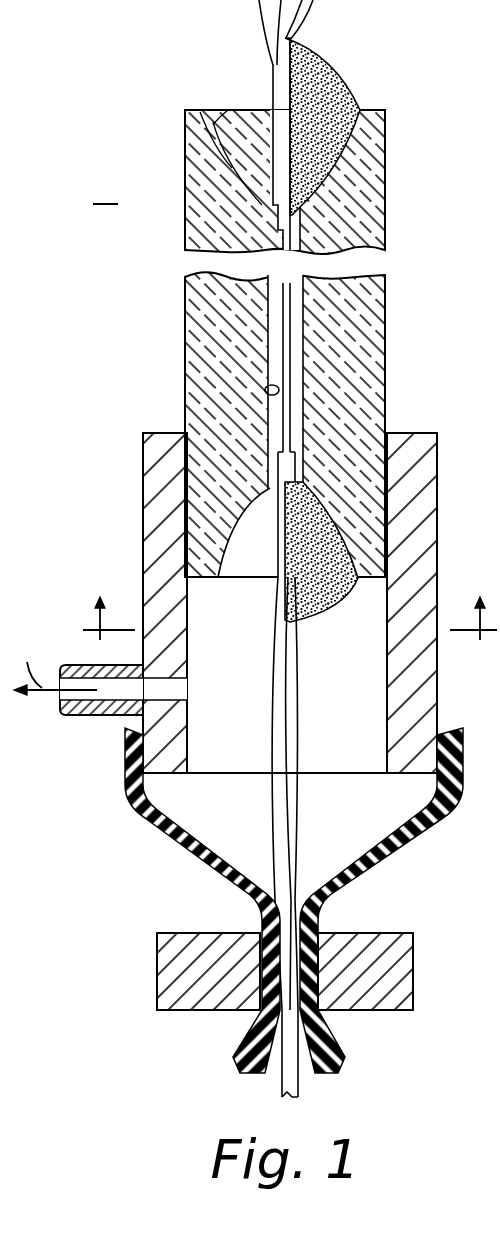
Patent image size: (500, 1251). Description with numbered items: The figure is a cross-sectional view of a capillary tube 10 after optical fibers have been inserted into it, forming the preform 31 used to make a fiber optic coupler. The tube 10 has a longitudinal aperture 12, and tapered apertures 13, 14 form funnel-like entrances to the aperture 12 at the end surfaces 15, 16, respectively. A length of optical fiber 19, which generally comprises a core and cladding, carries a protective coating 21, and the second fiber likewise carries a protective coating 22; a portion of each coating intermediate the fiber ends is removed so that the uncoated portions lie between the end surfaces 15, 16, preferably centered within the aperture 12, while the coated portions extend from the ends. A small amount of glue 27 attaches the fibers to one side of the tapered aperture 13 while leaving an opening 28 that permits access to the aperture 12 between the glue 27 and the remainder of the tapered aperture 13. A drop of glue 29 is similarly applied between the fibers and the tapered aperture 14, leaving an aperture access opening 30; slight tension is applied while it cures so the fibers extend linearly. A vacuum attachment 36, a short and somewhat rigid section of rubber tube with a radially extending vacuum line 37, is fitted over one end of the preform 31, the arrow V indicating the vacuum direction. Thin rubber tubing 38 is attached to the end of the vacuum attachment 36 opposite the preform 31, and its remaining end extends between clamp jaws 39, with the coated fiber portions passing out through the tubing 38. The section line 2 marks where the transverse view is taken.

The tube 10 is at (185, 148).
The longitudinal aperture 12 is at (266, 387).
The tapered aperture 13 is at (235, 530).
The tapered aperture 14 is at (228, 110).
The end surface 15 is at (204, 582).
The end surface 16 is at (200, 112).
The optical fiber 19 is at (292, 362).
The protective coating 21 is at (272, 716).
The protective coating 22 is at (299, 732).
The glue 27 is at (333, 612).
The opening 28 is at (268, 495).
The drop of glue 29 is at (333, 72).
The aperture access opening 30 is at (265, 196).
The preform 31 is at (185, 347).
The vacuum attachment 36 is at (143, 472).
The vacuum line 37 is at (88, 718).
The thin rubber tubing 38 is at (383, 852).
The clamp jaws 39 is at (160, 968).
The section line 2 is at (290, 599).
The vacuum direction V is at (55, 664).